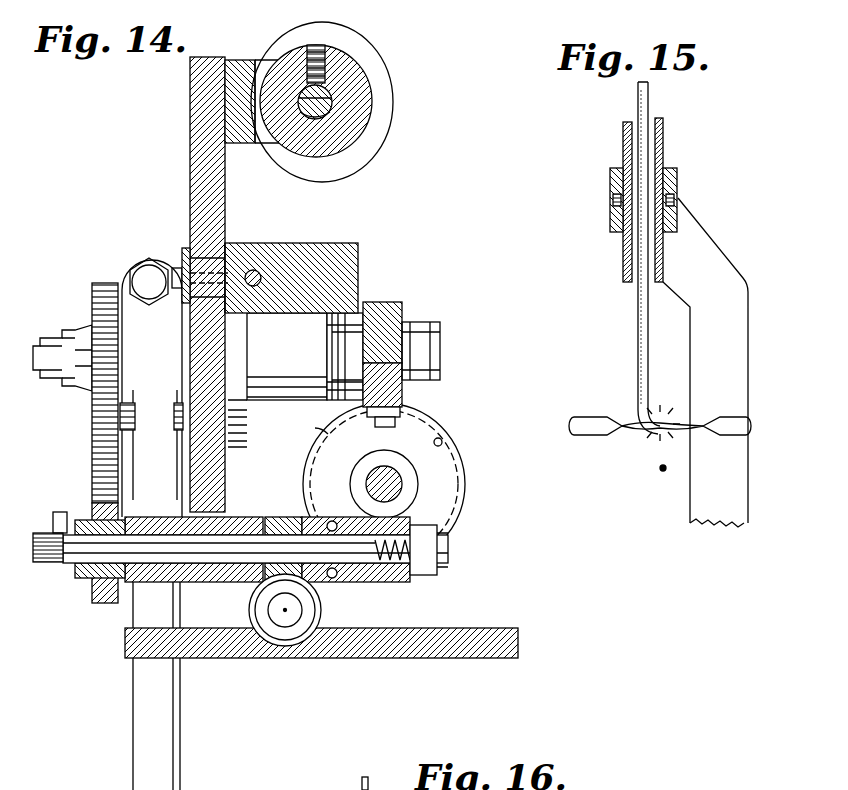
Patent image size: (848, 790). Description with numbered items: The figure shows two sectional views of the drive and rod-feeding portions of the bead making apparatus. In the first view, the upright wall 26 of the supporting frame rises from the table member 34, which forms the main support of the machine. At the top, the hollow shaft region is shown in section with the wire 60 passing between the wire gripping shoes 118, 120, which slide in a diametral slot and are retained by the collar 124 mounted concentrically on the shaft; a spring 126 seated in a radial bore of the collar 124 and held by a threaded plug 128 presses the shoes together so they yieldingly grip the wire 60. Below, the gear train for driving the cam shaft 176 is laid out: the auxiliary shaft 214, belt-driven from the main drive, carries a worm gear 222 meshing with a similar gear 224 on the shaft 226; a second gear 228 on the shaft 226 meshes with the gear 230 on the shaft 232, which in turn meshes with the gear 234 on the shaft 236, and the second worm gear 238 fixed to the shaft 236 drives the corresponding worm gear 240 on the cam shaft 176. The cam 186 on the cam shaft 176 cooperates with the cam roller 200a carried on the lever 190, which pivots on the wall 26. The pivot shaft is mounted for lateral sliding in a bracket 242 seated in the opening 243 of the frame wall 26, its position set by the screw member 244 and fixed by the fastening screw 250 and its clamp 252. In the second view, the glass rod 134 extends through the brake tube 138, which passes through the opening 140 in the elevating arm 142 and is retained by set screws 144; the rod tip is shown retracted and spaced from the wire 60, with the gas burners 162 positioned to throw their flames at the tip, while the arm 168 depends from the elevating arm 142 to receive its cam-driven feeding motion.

In FIG. 14, the upright wall 26 is at (190, 174).
In FIG. 14, the table member 34 is at (505, 628).
In FIG. 14, the wire 60 is at (338, 138).
In FIG. 15, the wire 60 is at (663, 472).
In FIG. 14, the wire gripping shoe 118 is at (323, 113).
In FIG. 14, the wire gripping shoe 120 is at (320, 100).
In FIG. 14, the collar 124 is at (343, 68).
In FIG. 14, the spring 126 is at (325, 78).
In FIG. 14, the plug 128 is at (300, 47).
In FIG. 15, the glass rod 134 is at (638, 318).
In FIG. 15, the brake tube 138 is at (665, 133).
In FIG. 15, the opening 140 is at (677, 172).
In FIG. 15, the elevating housing or arm 142 is at (612, 232).
In FIG. 15, the set screws 144 is at (675, 200).
In FIG. 15, the gas burners 162 is at (732, 422).
In FIG. 15, the arm 168 is at (748, 494).
In FIG. 14, the cam shaft 176 is at (402, 480).
In FIG. 14, the cam 186 is at (430, 428).
In FIG. 14, the lever 190 is at (402, 365).
In FIG. 14, the cam roller 200a is at (413, 407).
In FIG. 14, the auxiliary shaft 214 is at (290, 620).
In FIG. 14, the worm gear 222 is at (315, 608).
In FIG. 14, the gear 224 is at (280, 517).
In FIG. 14, the shaft 226 is at (85, 550).
In FIG. 14, the second gear 228 is at (104, 603).
In FIG. 14, the gear 230 is at (100, 445).
In FIG. 14, the shaft 232 is at (57, 530).
In FIG. 14, the gear 234 is at (98, 405).
In FIG. 14, the shaft 236 is at (42, 342).
In FIG. 14, the second worm gear 238 is at (385, 305).
In FIG. 14, the worm gear 240 is at (295, 380).
In FIG. 14, the bracket 242 is at (322, 245).
In FIG. 14, the opening 243 is at (228, 245).
In FIG. 14, the screw member 244 is at (258, 272).
In FIG. 14, the fastening screw 250 is at (176, 268).
In FIG. 14, the clamp 252 is at (185, 250).